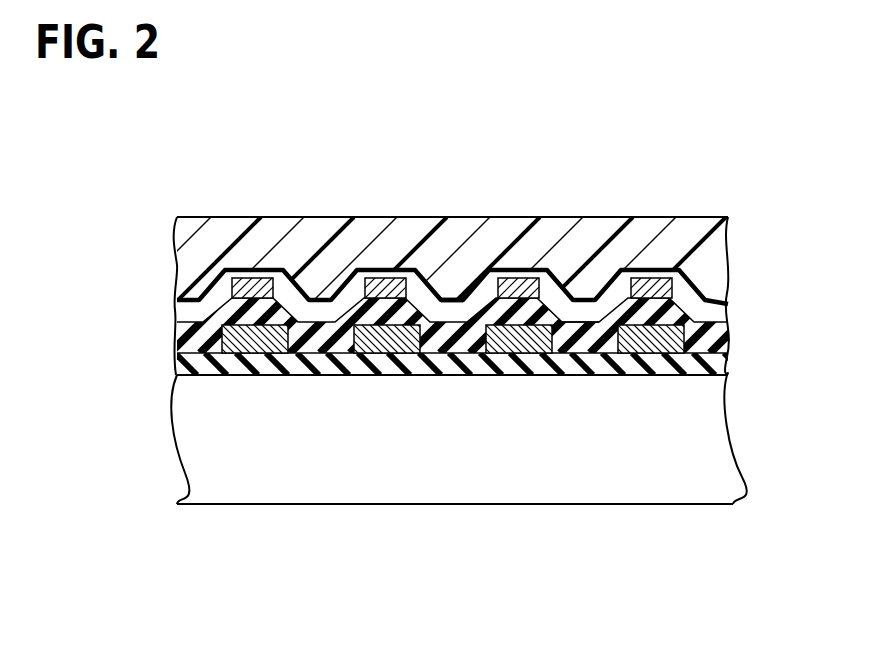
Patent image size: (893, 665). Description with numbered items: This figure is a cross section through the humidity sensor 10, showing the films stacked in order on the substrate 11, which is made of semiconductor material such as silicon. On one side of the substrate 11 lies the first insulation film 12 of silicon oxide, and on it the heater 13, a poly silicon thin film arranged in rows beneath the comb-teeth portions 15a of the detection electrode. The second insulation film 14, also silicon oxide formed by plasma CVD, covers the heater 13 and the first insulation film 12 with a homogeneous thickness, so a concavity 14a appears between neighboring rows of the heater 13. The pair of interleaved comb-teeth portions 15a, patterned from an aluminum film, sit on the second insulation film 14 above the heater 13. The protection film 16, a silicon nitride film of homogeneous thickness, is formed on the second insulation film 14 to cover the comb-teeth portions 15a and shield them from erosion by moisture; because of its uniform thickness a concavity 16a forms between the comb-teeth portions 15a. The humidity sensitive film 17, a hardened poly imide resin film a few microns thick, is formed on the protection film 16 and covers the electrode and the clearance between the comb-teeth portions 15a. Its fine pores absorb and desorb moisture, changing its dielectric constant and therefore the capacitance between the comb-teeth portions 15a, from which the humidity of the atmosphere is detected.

The humidity sensor 10 is at (717, 167).
The substrate 11 is at (718, 447).
The first insulation film 12 is at (733, 360).
The heater 13 is at (515, 345).
The second insulation film 14 is at (724, 348).
The concavity 14a is at (580, 320).
The comb-teeth portion 15a is at (648, 277).
The protection film 16 is at (720, 307).
The concavity 16a is at (455, 297).
The humidity sensitive film 17 is at (298, 240).